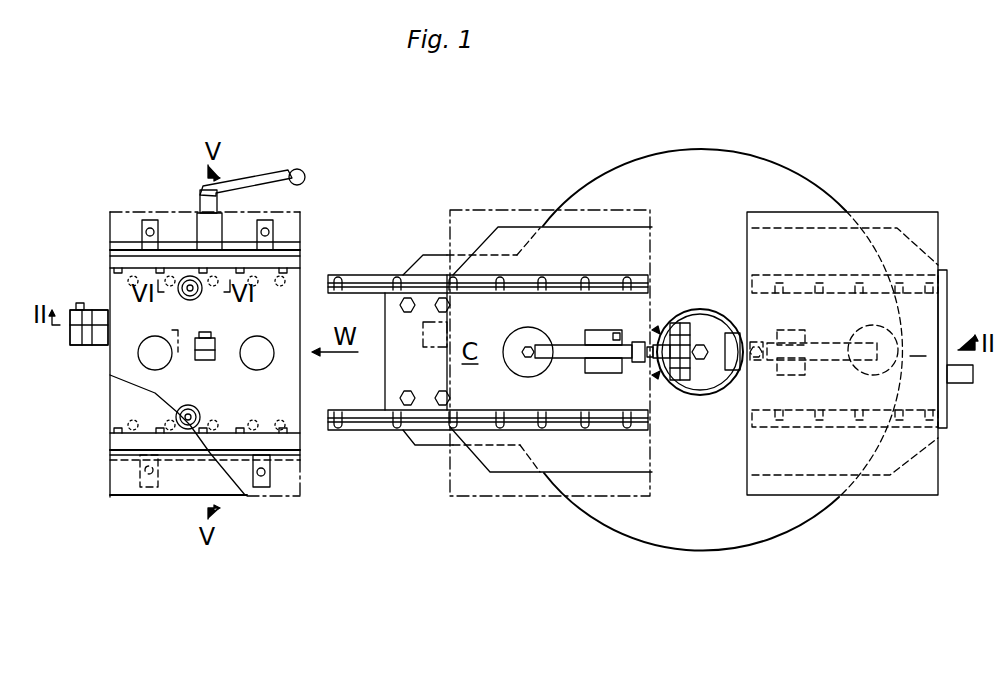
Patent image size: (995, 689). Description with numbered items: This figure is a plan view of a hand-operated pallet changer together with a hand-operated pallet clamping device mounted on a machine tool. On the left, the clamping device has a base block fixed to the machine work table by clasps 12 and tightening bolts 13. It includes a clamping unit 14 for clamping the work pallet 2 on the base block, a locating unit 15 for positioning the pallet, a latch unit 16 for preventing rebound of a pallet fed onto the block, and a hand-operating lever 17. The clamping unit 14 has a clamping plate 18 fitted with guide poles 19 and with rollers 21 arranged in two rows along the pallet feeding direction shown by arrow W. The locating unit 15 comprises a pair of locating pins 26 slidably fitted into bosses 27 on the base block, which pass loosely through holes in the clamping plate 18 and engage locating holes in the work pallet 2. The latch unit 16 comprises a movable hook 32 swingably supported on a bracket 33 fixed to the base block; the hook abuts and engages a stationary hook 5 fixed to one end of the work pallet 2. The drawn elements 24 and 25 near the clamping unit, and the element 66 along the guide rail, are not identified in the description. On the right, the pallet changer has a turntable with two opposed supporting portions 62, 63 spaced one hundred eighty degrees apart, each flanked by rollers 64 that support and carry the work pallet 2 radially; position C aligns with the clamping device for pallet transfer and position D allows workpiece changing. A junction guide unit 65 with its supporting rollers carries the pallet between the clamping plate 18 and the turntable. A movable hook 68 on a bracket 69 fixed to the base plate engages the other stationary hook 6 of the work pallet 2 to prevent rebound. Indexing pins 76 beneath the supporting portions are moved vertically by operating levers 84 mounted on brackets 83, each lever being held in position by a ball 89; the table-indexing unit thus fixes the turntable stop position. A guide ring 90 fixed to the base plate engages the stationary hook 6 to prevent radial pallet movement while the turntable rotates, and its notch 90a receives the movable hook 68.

The work pallet 2 is at (532, 497).
The stationary hook 5 is at (423, 340).
The stationary hook 6 is at (658, 328).
The clasp 12 is at (150, 220).
The tightening bolt 13 is at (146, 232).
The clamping unit 14 is at (215, 340).
The locating unit 15 is at (188, 280).
The latch unit 16 is at (70, 345).
The hand-operating lever 17 is at (305, 172).
The clamping plate 18 is at (300, 316).
The guide pole 19 is at (308, 368).
The roller 21 is at (118, 266).
The stop block 24 is at (195, 362).
The pin 25 is at (215, 358).
The locating pin 26 is at (195, 283).
The boss 27 is at (198, 297).
The movable hook 32 is at (75, 320).
The bracket 33 is at (70, 340).
The supporting portion 62 is at (523, 303).
The supporting portion 63 is at (948, 312).
The roller 64 is at (455, 272).
The junction guide unit 65 is at (366, 275).
The lower guide rail 66 is at (350, 293).
The movable hook 68 is at (676, 382).
The bracket 69 is at (688, 325).
The indexing pin 76 is at (515, 330).
The bracket 83 is at (590, 370).
The operating lever 84 is at (560, 343).
The ball 89 is at (636, 340).
The guide ring 90 is at (716, 395).
The notch 90a is at (648, 360).